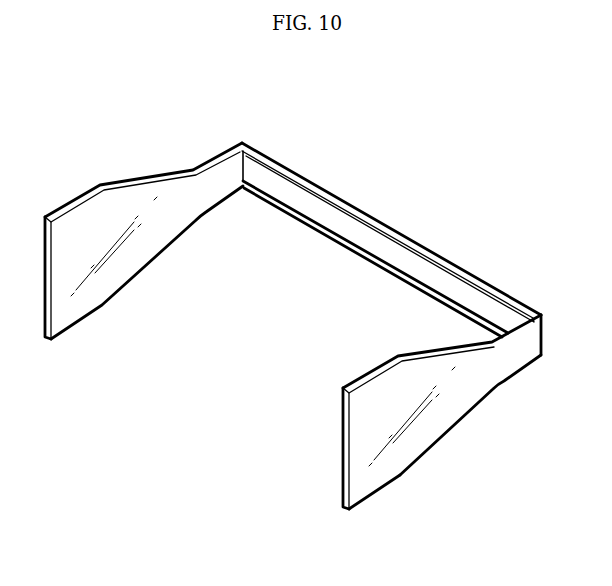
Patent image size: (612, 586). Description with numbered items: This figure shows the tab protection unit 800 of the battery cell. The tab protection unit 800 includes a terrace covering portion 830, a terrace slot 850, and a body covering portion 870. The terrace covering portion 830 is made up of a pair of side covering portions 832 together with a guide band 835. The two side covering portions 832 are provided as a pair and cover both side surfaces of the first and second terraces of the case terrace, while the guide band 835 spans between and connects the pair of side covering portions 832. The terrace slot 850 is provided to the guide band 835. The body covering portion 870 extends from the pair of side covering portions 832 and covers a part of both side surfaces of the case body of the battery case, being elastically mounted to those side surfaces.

The tab protection unit 800 is at (107, 149).
The terrace covering portion 830 is at (517, 403).
The side covering portion 832 is at (453, 425).
The guide band 835 is at (466, 271).
The terrace slot 850 is at (381, 223).
The body covering portion 870 is at (378, 490).